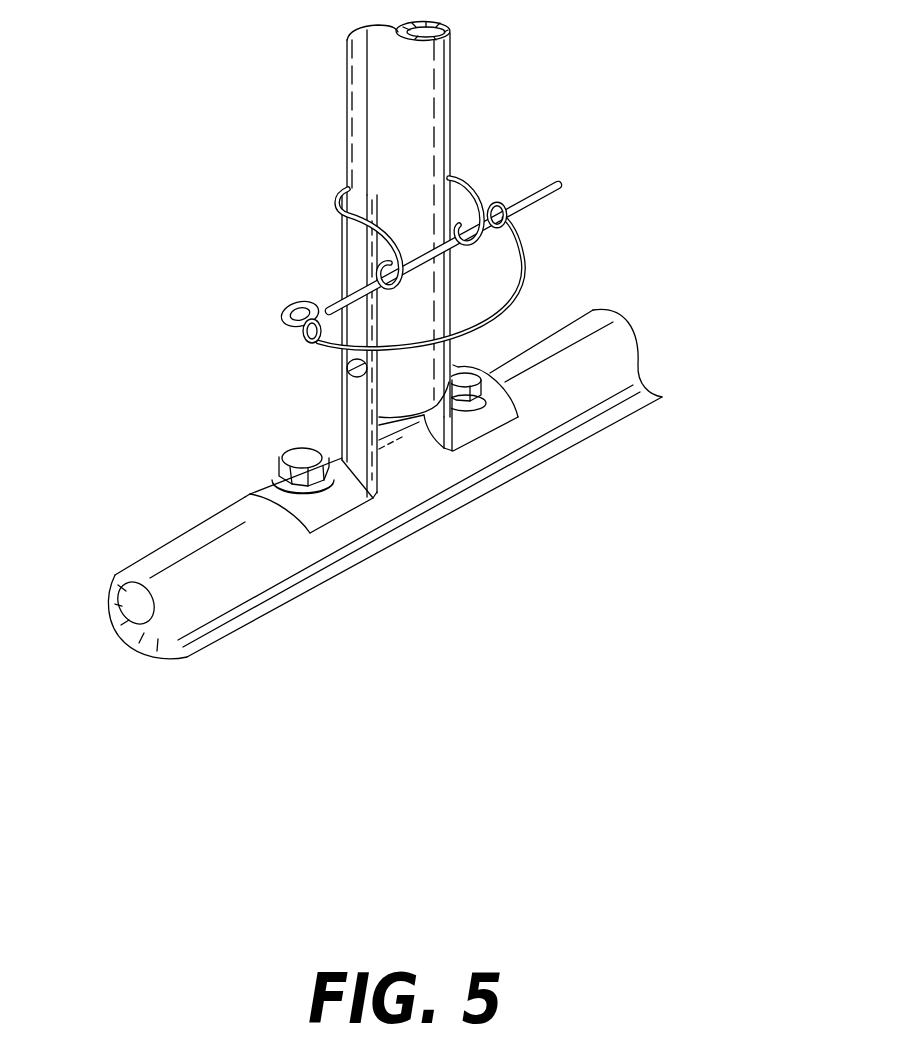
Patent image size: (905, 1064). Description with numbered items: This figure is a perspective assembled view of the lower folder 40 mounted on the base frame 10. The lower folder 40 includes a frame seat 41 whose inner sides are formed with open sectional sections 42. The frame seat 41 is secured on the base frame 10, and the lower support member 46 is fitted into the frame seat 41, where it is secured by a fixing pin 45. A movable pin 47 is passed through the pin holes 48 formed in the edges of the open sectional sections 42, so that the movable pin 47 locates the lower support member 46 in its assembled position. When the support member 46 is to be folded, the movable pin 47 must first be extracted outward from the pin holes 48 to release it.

The base frame 10 is at (228, 593).
The lower folder 40 is at (227, 342).
The frame seat 41 is at (343, 396).
The open sectional sections 42 is at (426, 420).
The fixing pin 45 is at (350, 365).
The lower support member 46 is at (437, 100).
The movable pin 47 is at (525, 207).
The pin holes 48 is at (340, 266).